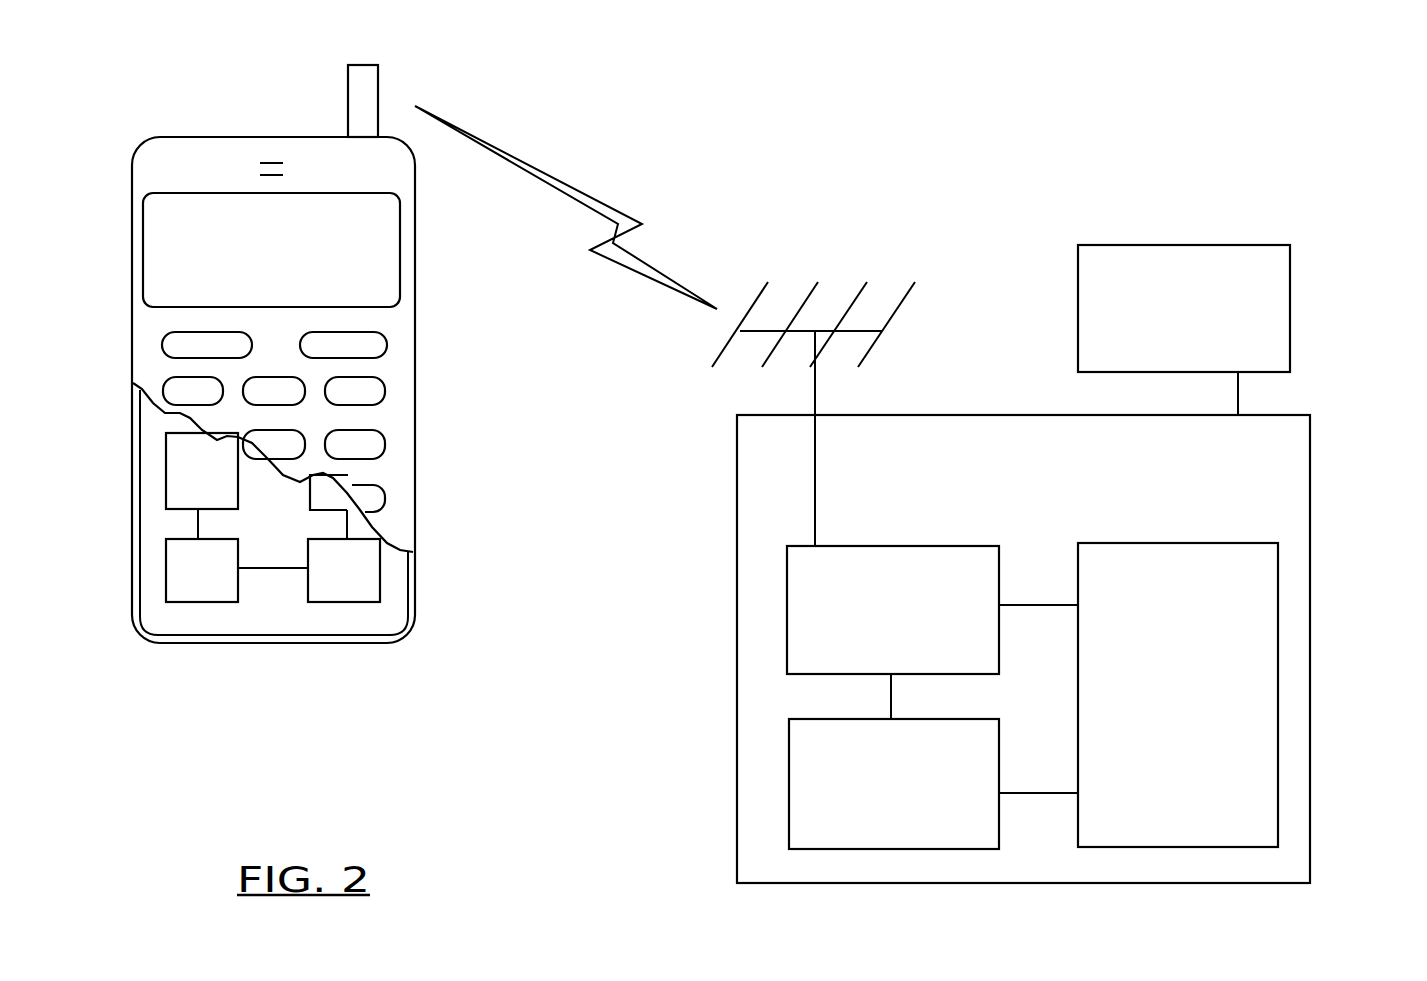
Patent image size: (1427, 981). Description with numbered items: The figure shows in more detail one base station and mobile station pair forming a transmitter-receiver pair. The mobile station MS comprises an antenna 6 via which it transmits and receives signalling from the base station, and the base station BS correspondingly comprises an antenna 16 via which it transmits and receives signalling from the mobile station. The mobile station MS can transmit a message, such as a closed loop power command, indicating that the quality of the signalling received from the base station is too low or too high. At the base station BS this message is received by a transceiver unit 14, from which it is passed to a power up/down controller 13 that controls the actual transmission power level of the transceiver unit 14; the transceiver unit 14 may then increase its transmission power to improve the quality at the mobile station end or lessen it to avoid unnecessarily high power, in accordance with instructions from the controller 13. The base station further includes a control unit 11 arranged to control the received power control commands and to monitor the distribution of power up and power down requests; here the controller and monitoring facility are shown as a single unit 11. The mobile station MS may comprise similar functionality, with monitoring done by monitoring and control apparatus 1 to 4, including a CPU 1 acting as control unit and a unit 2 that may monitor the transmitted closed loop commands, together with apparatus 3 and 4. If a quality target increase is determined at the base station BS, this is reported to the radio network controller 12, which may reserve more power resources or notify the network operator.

The control unit 1 is at (193, 474).
The monitoring unit 2 is at (196, 574).
The monitoring and control apparatus 3 is at (353, 574).
The monitoring and control apparatus 4 is at (328, 485).
The antenna 6 is at (358, 100).
The control unit 11 is at (1262, 678).
The radio network controller 12 is at (1087, 296).
The power up/down controller 13 is at (790, 730).
The transceiver unit 14 is at (787, 561).
The antenna 16 is at (815, 398).
The mobile station MS is at (303, 635).
The base station BS is at (760, 828).